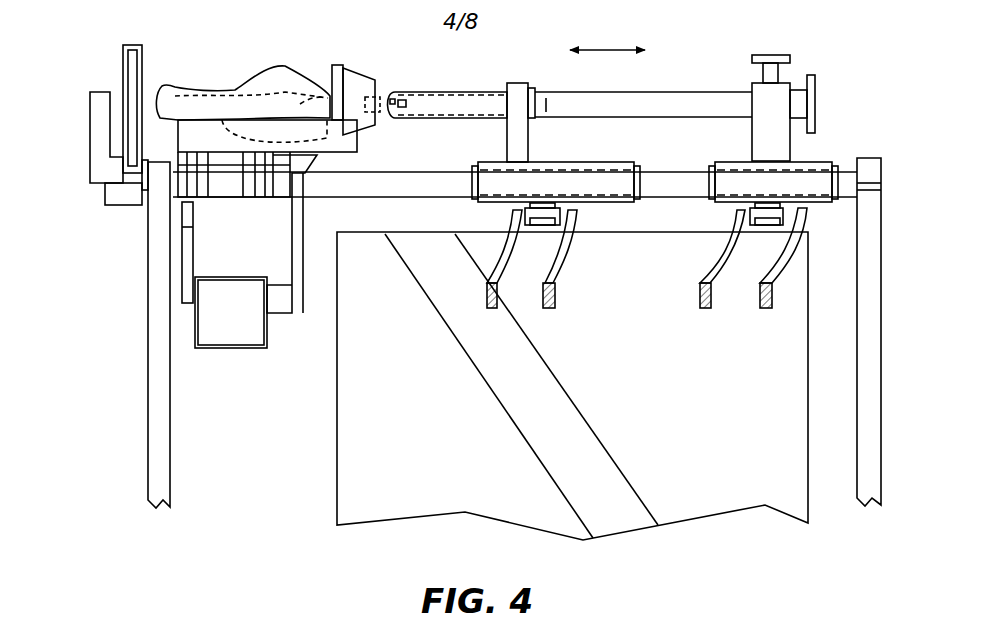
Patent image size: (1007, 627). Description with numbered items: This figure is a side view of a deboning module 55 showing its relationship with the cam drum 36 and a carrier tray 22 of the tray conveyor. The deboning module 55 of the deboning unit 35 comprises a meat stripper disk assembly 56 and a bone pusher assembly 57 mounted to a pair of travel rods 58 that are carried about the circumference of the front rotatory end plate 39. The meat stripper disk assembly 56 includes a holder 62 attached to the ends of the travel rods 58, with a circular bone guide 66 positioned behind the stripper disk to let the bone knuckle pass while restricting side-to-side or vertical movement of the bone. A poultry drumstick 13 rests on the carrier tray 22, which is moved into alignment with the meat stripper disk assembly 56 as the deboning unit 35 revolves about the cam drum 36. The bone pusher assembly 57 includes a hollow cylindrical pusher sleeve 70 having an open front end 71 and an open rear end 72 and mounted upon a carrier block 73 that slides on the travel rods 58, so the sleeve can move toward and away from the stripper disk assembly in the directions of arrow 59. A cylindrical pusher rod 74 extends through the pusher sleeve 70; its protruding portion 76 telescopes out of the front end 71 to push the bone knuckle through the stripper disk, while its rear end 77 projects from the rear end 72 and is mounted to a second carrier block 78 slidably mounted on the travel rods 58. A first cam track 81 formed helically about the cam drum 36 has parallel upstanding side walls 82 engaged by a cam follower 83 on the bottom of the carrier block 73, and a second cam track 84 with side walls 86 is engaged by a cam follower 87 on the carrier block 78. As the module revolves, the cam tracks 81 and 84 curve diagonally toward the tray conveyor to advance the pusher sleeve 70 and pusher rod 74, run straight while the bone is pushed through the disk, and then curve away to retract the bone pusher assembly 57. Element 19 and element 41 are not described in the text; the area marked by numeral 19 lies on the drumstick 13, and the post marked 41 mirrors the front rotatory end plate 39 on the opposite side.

The poultry drumstick 13 is at (222, 67).
The workpiece portion 19 is at (302, 104).
The carrier tray 22 is at (325, 145).
The deboning unit 35 is at (846, 78).
The cam drum 36 is at (336, 460).
The front rotatory end plate 39 is at (148, 375).
The right support post 41 is at (858, 365).
The deboning module 55 is at (541, 53).
The meat stripper disk assembly 56 is at (118, 65).
The bone pusher assembly 57 is at (712, 83).
The travel rods 58 is at (406, 172).
The arrow 59 is at (600, 47).
The holder 62 is at (140, 72).
The bone guide 66 is at (98, 113).
The pusher sleeve 70 is at (440, 90).
The open front end 71 is at (328, 68).
The open rear end 72 is at (540, 90).
The carrier block 73 is at (500, 187).
The pusher rod 74 is at (546, 105).
The protruding portion 76 is at (400, 92).
The rear end 77 is at (596, 105).
The carrier block 78 is at (733, 187).
The first cam track 81 is at (528, 281).
The side walls 82 is at (498, 272).
The cam follower 83 is at (528, 222).
The second cam track 84 is at (754, 286).
The side walls 86 is at (718, 268).
The cam follower 87 is at (750, 222).